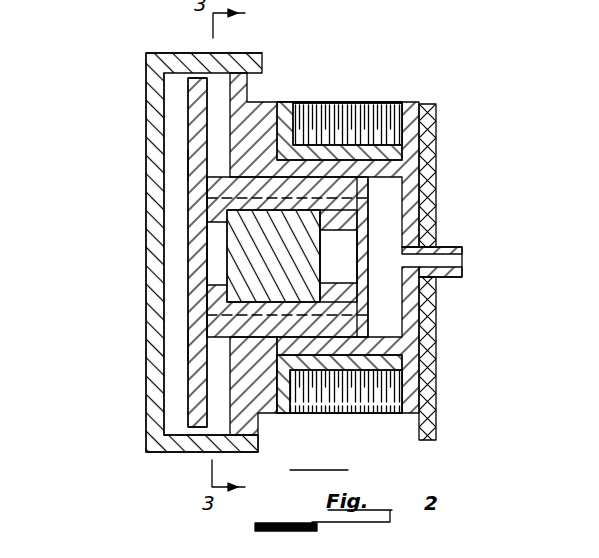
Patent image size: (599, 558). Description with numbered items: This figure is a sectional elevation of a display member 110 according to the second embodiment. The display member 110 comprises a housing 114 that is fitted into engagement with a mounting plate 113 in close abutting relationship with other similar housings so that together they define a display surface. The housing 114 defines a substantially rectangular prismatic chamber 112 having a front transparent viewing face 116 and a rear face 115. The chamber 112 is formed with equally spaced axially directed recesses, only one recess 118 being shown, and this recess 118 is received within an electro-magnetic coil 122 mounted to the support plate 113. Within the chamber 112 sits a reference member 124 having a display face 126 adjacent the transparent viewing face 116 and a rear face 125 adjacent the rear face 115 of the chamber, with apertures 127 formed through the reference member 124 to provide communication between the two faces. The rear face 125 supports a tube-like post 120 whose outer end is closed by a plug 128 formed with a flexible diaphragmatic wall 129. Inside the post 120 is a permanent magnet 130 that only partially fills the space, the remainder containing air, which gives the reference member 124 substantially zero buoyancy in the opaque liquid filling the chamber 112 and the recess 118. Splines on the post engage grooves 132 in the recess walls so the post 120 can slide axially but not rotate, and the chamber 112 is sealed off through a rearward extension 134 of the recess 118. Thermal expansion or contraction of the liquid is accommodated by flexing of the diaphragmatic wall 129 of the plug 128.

The display member 110 is at (118, 75).
The chamber 112 is at (222, 96).
The mounting plate 113 is at (437, 183).
The housing 114 is at (162, 53).
The rear face 115 is at (225, 397).
The front transparent viewing face 116 is at (163, 209).
The recess 118 is at (383, 218).
The tube-like post 120 is at (420, 344).
The electro-magnetic coil 122 is at (383, 104).
The reference member 124 is at (193, 124).
The rear face 125 is at (200, 372).
The display face 126 is at (188, 263).
The apertures 127 is at (190, 165).
The plug 128 is at (370, 292).
The flexible diaphragmatic wall 129 is at (358, 243).
The permanent magnet 130 is at (298, 278).
The grooves 132 is at (222, 340).
The rearward extension 134 is at (463, 268).